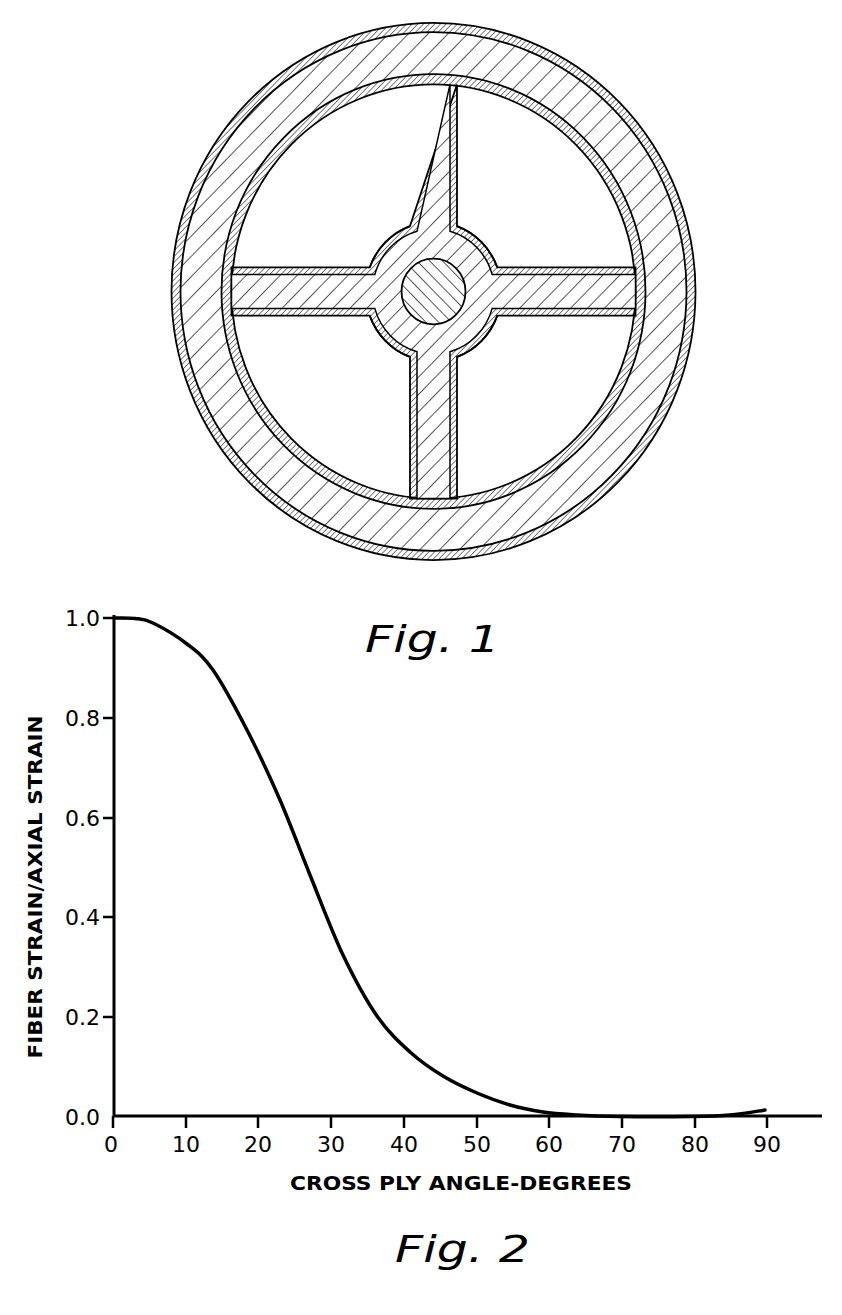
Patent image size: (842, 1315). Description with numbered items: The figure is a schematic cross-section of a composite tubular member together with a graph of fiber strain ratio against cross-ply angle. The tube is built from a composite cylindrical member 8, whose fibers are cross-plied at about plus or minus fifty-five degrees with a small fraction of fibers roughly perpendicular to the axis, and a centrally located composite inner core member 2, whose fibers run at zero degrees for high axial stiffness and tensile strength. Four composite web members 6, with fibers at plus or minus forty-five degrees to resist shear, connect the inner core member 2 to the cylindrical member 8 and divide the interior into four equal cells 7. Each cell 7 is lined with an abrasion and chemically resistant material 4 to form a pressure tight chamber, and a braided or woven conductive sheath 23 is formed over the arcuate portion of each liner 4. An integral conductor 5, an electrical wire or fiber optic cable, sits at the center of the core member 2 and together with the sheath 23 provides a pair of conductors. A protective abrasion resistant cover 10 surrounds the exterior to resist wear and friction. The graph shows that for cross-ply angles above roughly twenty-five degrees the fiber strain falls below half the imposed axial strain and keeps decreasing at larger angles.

The composite inner core member 2 is at (482, 243).
The abrasion and chemically resistant material 4 is at (457, 358).
The integral conductor 5 is at (380, 327).
The composite web member 6 is at (413, 157).
The cell 7 is at (327, 182).
The composite cylindrical member 8 is at (677, 240).
The protective abrasion resistant cover 10 is at (645, 132).
The sheath 23 is at (633, 358).